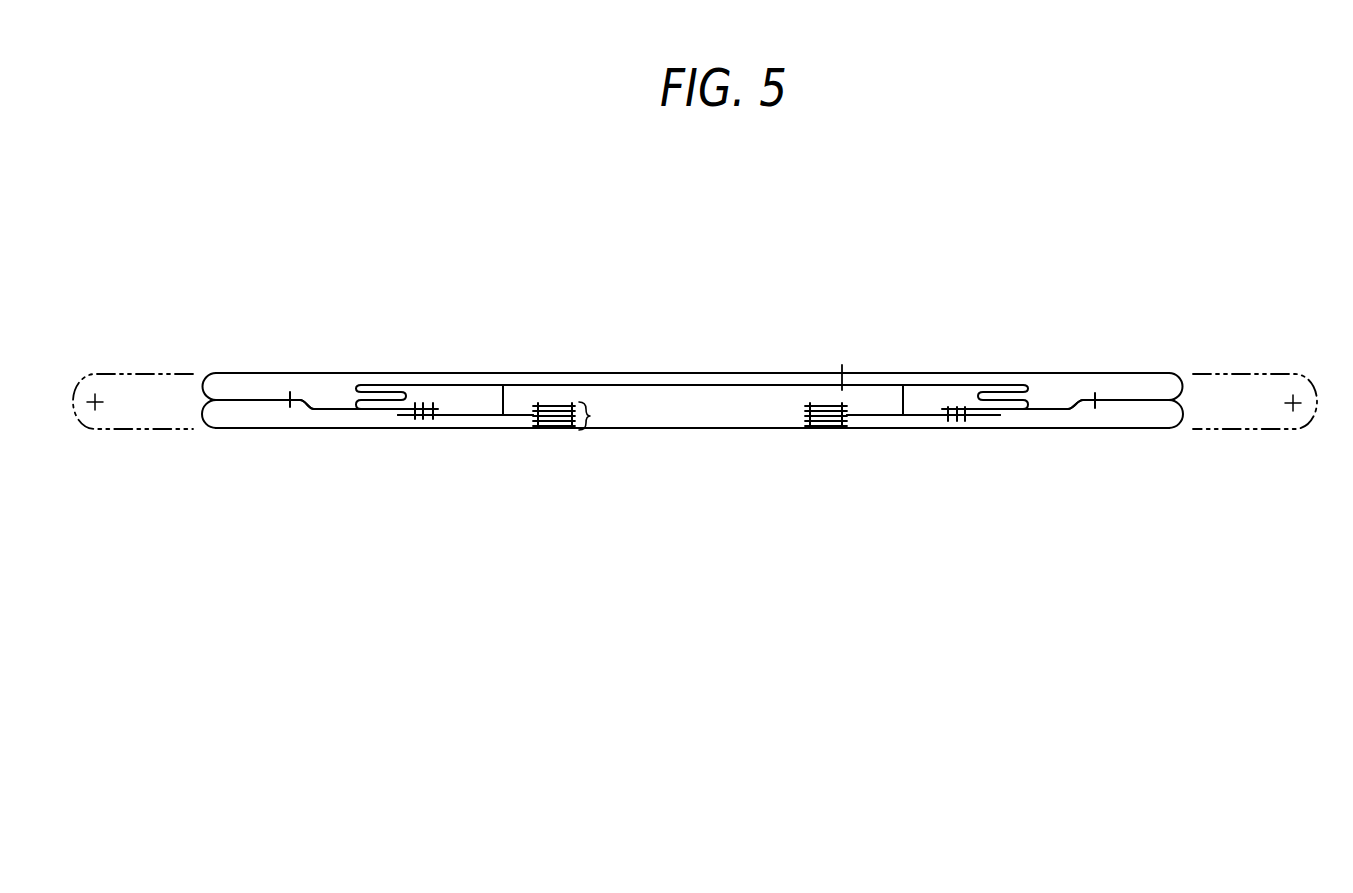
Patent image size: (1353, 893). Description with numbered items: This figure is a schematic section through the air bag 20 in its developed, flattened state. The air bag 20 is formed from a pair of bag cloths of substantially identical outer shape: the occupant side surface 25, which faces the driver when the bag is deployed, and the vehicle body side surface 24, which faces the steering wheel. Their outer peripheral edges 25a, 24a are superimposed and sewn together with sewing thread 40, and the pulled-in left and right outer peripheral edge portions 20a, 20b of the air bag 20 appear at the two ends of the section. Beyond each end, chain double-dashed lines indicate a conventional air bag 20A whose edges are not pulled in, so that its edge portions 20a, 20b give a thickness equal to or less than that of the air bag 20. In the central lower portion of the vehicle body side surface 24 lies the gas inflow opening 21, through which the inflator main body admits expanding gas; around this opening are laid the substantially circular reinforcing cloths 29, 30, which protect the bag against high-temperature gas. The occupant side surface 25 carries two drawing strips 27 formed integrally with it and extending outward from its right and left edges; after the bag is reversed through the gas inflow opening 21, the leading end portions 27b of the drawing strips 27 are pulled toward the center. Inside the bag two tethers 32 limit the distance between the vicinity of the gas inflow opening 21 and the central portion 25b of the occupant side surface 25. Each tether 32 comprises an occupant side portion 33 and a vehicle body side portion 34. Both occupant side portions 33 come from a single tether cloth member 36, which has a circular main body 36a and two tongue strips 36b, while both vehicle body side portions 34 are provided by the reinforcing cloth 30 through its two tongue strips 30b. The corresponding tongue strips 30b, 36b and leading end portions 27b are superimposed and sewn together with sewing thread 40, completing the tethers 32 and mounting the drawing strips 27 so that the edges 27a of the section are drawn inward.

The air bag 20 is at (258, 300).
The conventional air bag 20A is at (1249, 368).
The left outer peripheral edge portion 20a is at (207, 435).
The right outer peripheral edge portion 20b is at (1180, 437).
The gas inflow opening 21 is at (647, 421).
The vehicle body side surface 24 is at (332, 428).
The outer peripheral edge of vehicle body side surface 24a is at (255, 428).
The occupant side surface 25 is at (373, 373).
The outer peripheral edge of occupant side surface 25a is at (247, 400).
The central portion of occupant side surface 25b is at (690, 373).
The drawing strip 27 is at (332, 406).
The slit edge 27a is at (300, 403).
The leading end portion of drawing strip 27b is at (398, 415).
The reinforcing cloth 29 is at (590, 418).
The reinforcing cloth 30 is at (805, 421).
The tongue strip of reinforcing cloth 30b is at (517, 415).
The tether 32 is at (528, 297).
The occupant side portion of tether 33 is at (463, 385).
The vehicle body side portion of tether 34 is at (503, 385).
The tether cloth member 36 is at (744, 373).
The main body of tether cloth member 36a is at (620, 385).
The tongue strip of tether cloth member 36b is at (413, 385).
The sewing thread 40 is at (288, 392).